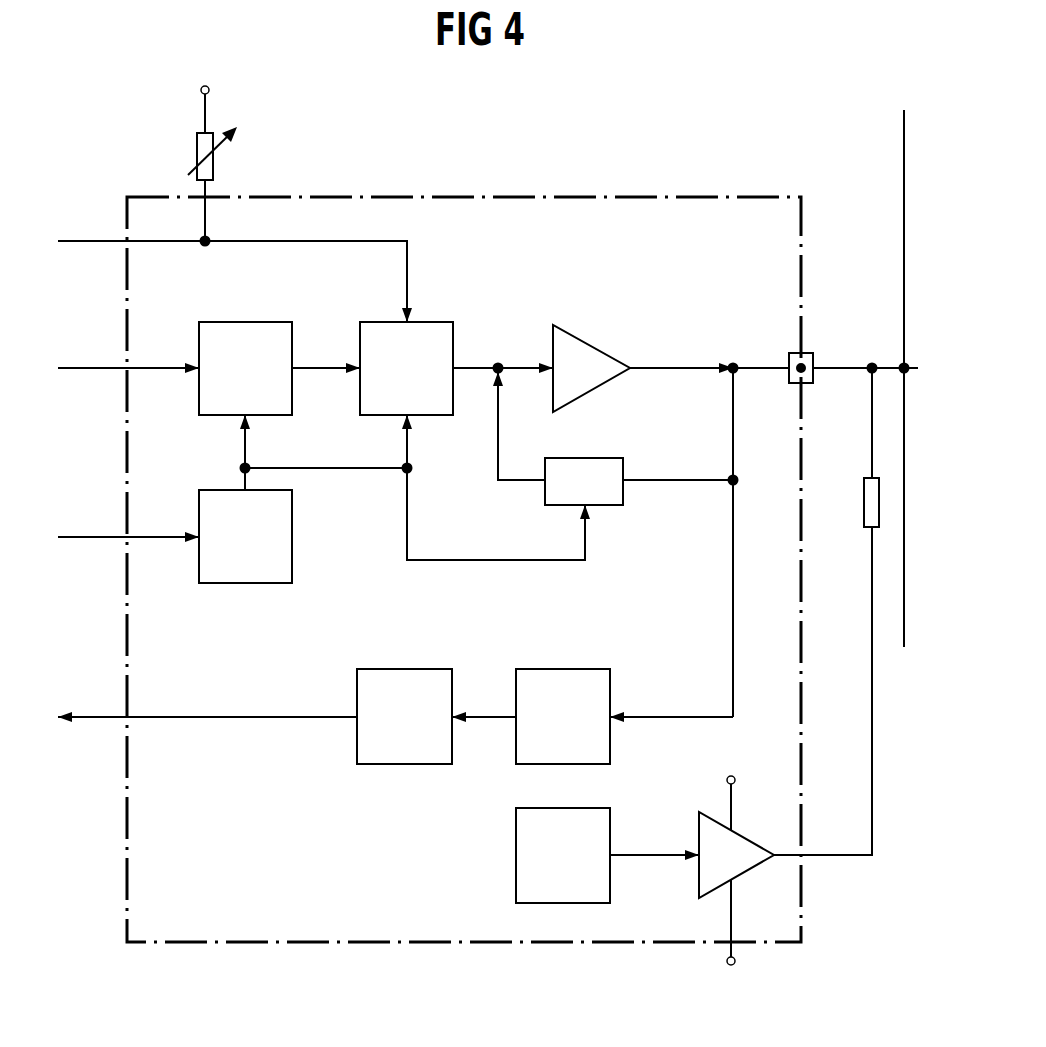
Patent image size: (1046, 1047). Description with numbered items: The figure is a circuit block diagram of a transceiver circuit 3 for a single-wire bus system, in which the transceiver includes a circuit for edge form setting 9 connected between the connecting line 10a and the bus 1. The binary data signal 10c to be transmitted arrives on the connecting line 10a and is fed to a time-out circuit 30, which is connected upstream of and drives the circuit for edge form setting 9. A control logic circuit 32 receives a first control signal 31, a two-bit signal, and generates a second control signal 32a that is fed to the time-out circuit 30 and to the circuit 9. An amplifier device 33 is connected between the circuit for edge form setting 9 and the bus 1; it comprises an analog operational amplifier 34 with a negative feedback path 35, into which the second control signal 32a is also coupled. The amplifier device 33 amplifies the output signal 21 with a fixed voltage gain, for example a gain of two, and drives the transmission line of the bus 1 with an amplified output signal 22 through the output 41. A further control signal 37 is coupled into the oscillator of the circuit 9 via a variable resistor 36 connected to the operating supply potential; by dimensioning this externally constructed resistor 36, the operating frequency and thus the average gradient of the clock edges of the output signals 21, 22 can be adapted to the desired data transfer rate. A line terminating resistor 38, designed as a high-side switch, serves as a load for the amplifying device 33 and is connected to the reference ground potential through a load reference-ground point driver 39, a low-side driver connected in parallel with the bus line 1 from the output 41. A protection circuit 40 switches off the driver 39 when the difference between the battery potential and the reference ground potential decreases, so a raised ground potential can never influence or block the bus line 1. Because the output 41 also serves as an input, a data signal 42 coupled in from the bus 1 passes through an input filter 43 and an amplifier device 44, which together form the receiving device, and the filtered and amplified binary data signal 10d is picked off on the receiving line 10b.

The bus 1 is at (904, 145).
The transceiver circuit 3 is at (785, 240).
The circuit for edge form setting 9 is at (397, 385).
The connecting line 10a is at (93, 371).
The receiving line 10b is at (100, 720).
The data signal 10c is at (164, 352).
The coupled-in binary data signal 10d is at (206, 699).
The output signal 21 is at (506, 352).
The amplified output signal 22 is at (709, 353).
The time-out circuit 30 is at (228, 385).
The first control signal 31 is at (129, 520).
The control logic circuit 32 is at (228, 553).
The second control signal 32a is at (390, 487).
The amplifier device 33 is at (692, 441).
The analog operational amplifier 34 is at (591, 338).
The negative feedback path 35 is at (568, 497).
The variable resistor 36 is at (197, 152).
The further control signal 37 is at (232, 281).
The line terminating resistor 38 is at (863, 498).
The load reference-ground point driver 39 is at (699, 878).
The protection circuit 40 is at (546, 872).
The output 41 is at (805, 353).
The data signal 42 is at (671, 699).
The input filter 43 is at (546, 733).
The amplifier device 44 is at (387, 733).